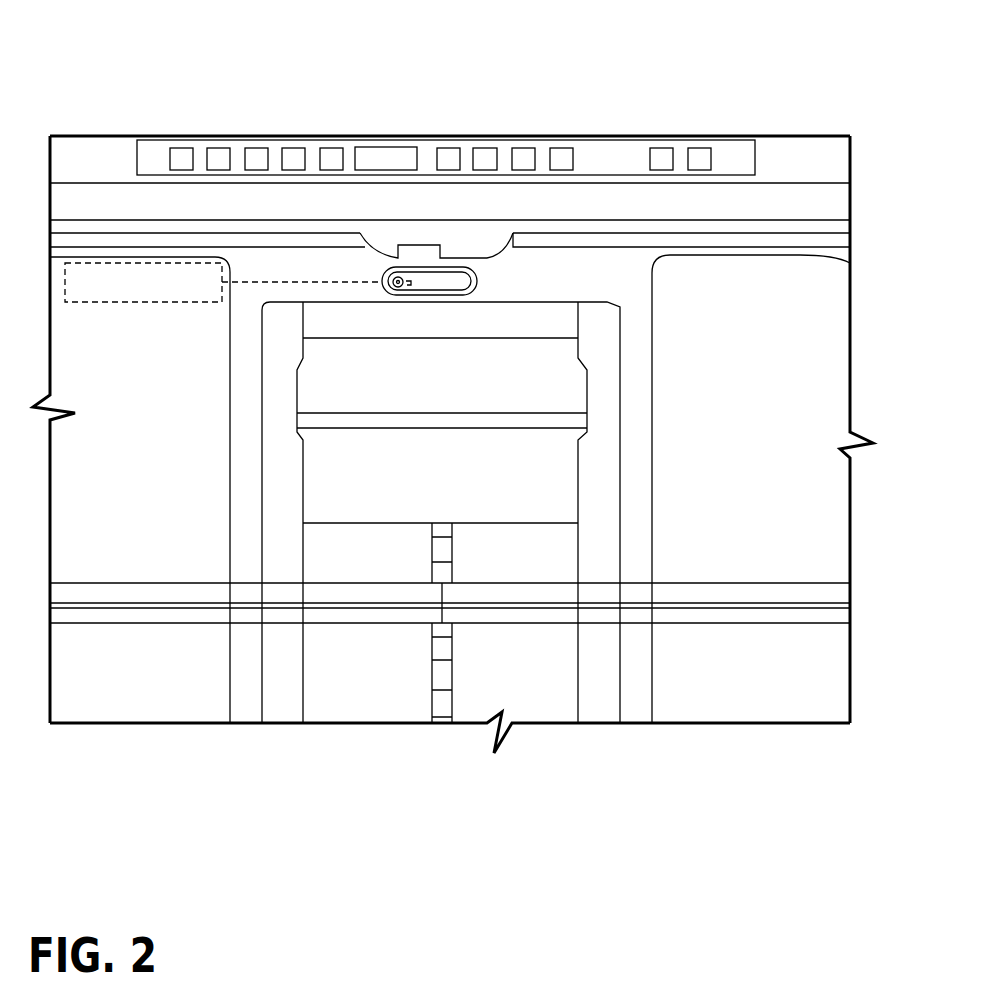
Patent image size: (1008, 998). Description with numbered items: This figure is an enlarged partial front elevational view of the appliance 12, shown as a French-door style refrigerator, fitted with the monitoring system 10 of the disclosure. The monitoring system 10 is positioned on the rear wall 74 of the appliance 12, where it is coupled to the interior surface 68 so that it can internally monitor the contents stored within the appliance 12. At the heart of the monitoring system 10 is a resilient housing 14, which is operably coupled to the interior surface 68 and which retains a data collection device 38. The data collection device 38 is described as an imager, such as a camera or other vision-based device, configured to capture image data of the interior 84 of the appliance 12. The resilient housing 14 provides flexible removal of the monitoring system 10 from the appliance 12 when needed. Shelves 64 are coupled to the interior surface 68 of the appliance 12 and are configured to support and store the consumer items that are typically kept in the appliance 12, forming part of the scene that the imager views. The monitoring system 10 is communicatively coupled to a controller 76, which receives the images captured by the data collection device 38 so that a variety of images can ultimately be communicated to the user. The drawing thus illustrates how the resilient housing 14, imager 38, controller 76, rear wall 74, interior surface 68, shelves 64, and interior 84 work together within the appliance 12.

The appliance 12 is at (133, 93).
The interior surface 68 is at (275, 268).
The data collection device 38 is at (412, 273).
The monitoring system 10 is at (453, 267).
The resilient housing 14 is at (480, 277).
The interior 84 is at (597, 273).
The rear wall 74 is at (747, 328).
The controller 76 is at (127, 300).
The shelves 64 is at (773, 590).